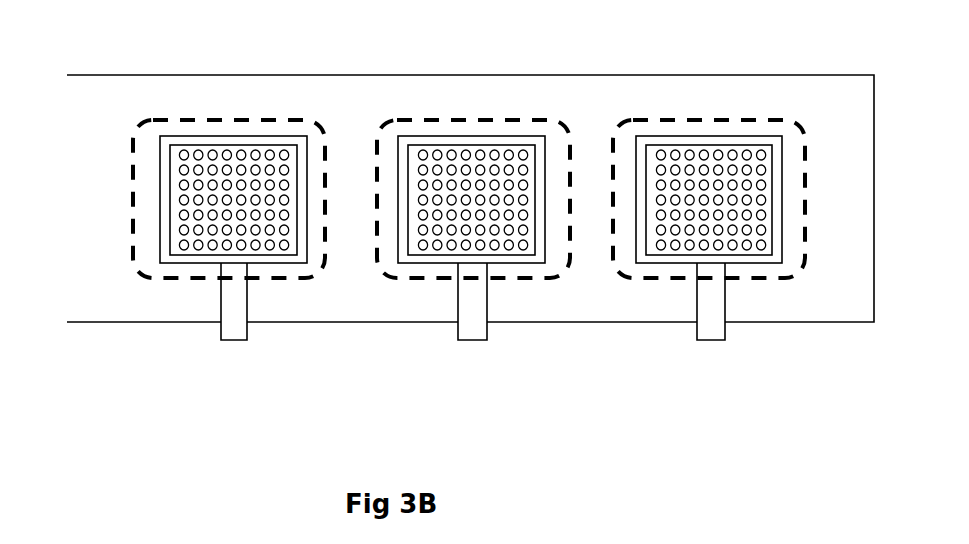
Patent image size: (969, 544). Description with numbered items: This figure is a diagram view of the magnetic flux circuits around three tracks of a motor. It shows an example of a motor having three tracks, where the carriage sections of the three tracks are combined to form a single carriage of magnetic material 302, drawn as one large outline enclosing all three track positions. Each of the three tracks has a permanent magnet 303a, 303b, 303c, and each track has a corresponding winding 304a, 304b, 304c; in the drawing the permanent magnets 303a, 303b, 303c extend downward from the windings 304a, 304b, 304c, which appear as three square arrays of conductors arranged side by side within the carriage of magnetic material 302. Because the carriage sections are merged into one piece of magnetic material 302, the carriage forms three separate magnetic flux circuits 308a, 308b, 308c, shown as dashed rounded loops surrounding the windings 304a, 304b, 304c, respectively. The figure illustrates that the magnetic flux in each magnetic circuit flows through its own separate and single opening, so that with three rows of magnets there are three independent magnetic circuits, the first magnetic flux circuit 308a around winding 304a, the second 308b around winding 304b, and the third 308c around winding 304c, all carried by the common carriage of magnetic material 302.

The carriage of magnetic material 302 is at (722, 100).
The permanent magnet 303a is at (230, 320).
The permanent magnet 303b is at (477, 323).
The permanent magnet 303c is at (710, 323).
The winding 304a is at (268, 145).
The winding 304b is at (475, 145).
The winding 304c is at (670, 148).
The magnetic flux circuit 308a is at (147, 123).
The magnetic flux circuit 308b is at (397, 120).
The magnetic flux circuit 308c is at (612, 130).